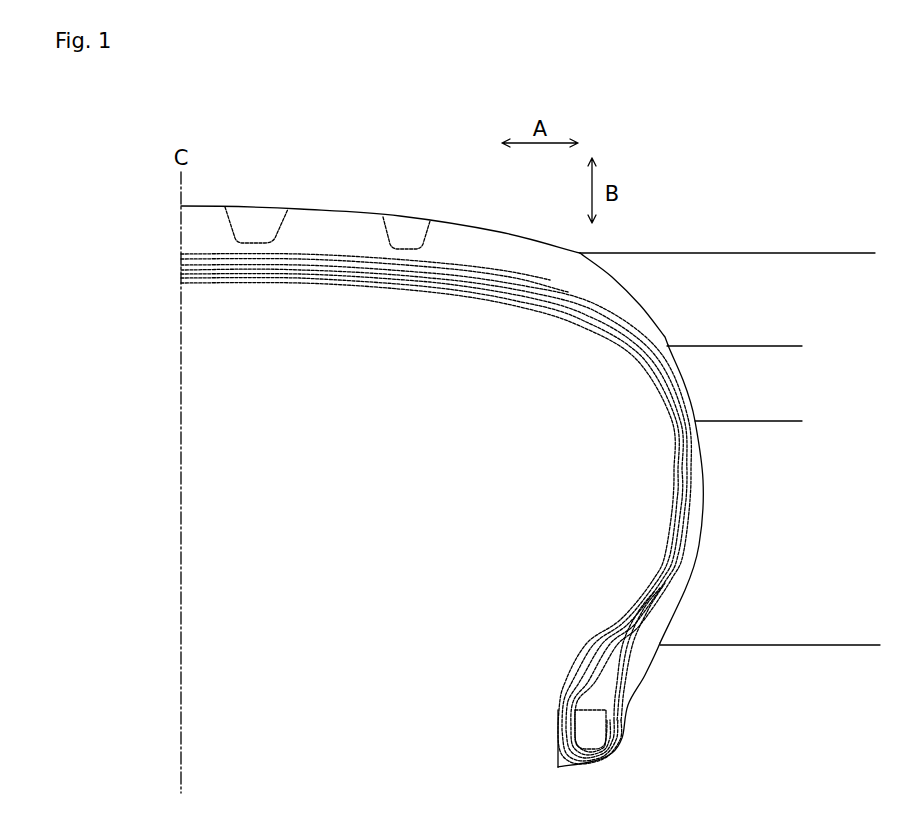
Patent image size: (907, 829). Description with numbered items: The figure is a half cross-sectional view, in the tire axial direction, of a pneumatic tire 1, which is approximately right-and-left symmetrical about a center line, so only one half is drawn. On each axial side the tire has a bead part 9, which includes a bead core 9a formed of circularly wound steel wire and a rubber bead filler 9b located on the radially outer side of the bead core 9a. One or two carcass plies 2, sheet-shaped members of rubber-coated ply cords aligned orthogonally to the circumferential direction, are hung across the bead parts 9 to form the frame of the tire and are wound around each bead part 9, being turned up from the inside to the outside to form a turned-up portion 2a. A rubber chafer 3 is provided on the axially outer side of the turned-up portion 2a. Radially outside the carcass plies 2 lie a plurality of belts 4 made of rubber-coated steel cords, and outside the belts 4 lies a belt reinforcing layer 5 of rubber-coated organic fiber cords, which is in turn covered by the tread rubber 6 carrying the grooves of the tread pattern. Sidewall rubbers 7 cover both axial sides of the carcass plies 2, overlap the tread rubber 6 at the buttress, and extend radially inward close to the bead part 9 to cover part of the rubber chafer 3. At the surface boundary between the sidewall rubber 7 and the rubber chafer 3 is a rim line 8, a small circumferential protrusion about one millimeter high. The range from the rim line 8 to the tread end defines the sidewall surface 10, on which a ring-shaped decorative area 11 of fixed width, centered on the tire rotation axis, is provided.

The pneumatic tire 1 is at (345, 517).
The carcass ply 2 is at (677, 445).
The turned-up portion 2a is at (670, 572).
The rubber chafer 3 is at (640, 645).
The belt 4 is at (385, 270).
The belt reinforcing layer 5 is at (300, 255).
The tread rubber 6 is at (330, 233).
The sidewall rubber 7 is at (665, 370).
The rim line 8 is at (660, 645).
The bead part 9 is at (488, 665).
The bead core 9a is at (583, 722).
The bead filler 9b is at (593, 690).
The sidewall surface 10 is at (846, 253).
The decorative area 11 is at (769, 346).